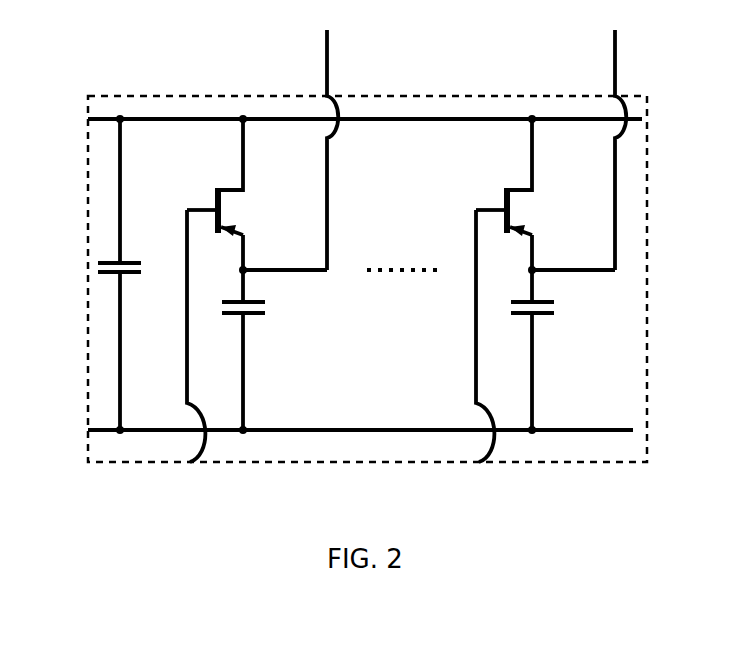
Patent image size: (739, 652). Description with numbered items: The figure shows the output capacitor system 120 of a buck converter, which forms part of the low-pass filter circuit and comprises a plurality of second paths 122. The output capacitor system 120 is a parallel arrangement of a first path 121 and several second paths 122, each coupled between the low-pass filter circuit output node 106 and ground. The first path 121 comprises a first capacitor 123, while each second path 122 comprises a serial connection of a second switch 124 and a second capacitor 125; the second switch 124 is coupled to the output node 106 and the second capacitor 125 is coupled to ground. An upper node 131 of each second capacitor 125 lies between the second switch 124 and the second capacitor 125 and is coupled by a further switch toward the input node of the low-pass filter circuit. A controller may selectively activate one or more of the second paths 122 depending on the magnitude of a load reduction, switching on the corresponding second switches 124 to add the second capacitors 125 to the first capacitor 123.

The low-pass filter circuit output node 106 is at (122, 117).
The output capacitor system 120 is at (530, 462).
The first path 121 is at (117, 403).
The second path 122 is at (244, 357).
The first capacitor 123 is at (98, 270).
The second switch 124 is at (215, 207).
The second capacitor 125 is at (250, 306).
The upper node 131 is at (246, 268).